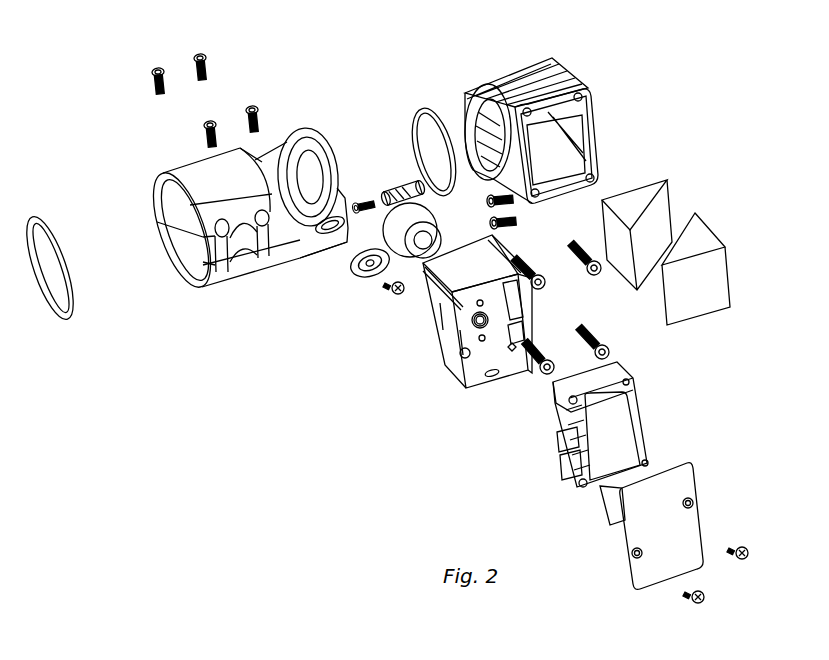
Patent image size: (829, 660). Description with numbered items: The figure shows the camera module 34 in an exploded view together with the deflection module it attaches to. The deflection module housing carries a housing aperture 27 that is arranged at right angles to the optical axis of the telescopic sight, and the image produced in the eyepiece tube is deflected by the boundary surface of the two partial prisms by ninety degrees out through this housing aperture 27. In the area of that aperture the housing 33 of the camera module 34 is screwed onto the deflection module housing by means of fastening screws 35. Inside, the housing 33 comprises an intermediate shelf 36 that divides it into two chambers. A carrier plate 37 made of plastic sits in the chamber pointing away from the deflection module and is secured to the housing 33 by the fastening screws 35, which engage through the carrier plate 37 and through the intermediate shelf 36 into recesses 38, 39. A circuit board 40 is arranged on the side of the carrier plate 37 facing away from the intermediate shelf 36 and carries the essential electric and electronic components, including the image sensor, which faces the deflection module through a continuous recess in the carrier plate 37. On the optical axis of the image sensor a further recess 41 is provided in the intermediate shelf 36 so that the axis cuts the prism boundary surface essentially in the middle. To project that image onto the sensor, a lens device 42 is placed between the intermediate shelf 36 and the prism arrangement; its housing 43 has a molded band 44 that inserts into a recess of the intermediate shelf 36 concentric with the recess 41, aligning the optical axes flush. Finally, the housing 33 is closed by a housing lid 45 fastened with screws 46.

The housing aperture 27 is at (560, 160).
The housing 33 is at (448, 345).
The camera module 34 is at (408, 440).
The fastening screws 35 is at (597, 274).
The intermediate shelf 36 is at (519, 339).
The carrier plate 37 is at (600, 440).
The recess 38 is at (646, 462).
The recess 39 is at (512, 352).
The circuit board 40 is at (580, 452).
The recess 41 is at (474, 319).
The lens device 42 is at (382, 205).
The housing 43 is at (398, 245).
The molded band 44 is at (398, 247).
The housing lid 45 is at (640, 520).
The screws 46 is at (700, 592).